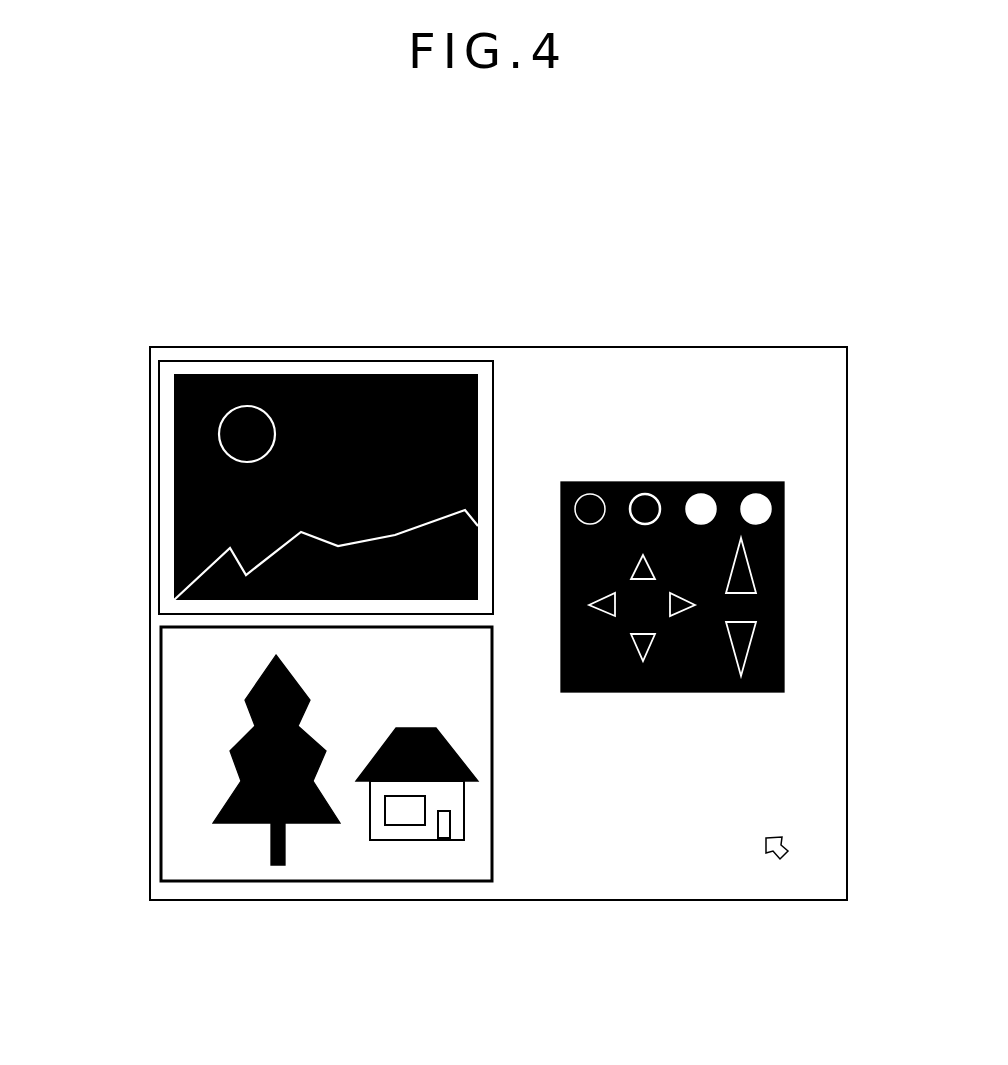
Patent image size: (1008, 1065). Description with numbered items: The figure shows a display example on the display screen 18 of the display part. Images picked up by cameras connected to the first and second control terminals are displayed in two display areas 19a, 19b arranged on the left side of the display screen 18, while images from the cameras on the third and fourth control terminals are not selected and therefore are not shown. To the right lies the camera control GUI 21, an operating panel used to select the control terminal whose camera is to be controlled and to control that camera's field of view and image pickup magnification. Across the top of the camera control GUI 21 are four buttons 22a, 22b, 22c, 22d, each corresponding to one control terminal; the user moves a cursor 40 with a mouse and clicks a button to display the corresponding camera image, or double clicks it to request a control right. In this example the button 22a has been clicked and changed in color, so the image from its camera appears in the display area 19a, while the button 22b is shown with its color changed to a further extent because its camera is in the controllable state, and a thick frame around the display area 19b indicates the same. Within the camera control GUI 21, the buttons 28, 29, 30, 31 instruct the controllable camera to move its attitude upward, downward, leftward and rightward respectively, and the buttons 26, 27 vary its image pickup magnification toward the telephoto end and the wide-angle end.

The display screen 18 is at (193, 339).
The display area 19a is at (166, 407).
The display area 19b is at (167, 752).
The camera control GUI 21 is at (776, 515).
The button 22a is at (582, 474).
The button 22b is at (640, 474).
The button 22c is at (696, 474).
The button 22d is at (753, 474).
The button 26 is at (748, 566).
The button 27 is at (747, 632).
The button 28 is at (628, 576).
The button 29 is at (644, 642).
The button 30 is at (593, 610).
The button 31 is at (677, 603).
The cursor 40 is at (776, 830).